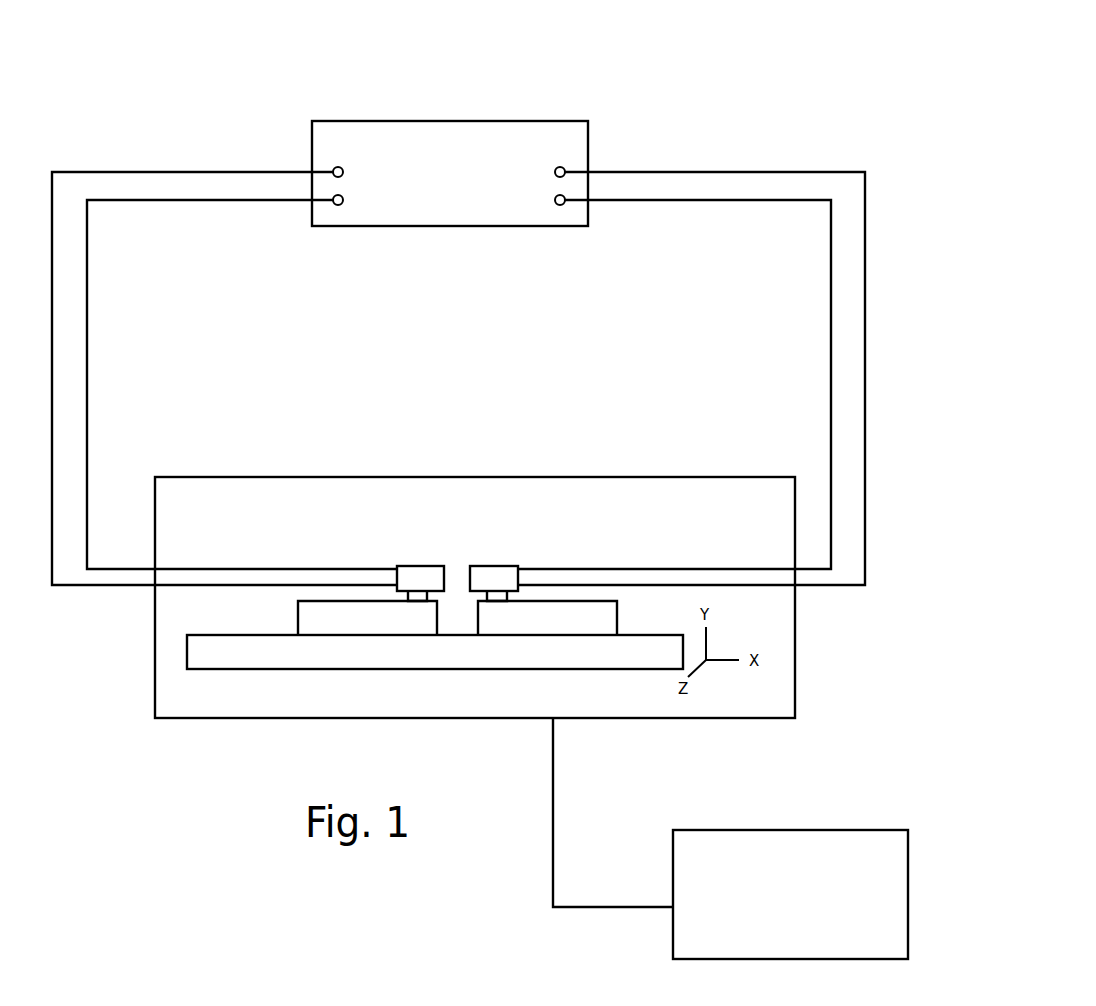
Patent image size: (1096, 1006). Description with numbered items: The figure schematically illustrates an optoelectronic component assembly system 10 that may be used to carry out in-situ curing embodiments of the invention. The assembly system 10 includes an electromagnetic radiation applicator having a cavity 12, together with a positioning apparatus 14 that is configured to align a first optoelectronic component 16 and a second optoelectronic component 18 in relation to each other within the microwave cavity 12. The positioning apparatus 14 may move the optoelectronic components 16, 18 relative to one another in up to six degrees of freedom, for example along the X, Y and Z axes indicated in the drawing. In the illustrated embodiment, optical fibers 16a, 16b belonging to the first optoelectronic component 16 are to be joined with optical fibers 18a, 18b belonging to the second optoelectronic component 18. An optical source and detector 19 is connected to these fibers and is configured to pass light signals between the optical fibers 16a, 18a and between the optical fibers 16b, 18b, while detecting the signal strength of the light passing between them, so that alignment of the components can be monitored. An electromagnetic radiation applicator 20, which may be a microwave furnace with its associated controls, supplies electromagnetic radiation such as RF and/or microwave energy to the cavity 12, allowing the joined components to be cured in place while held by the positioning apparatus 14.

The optoelectronic component assembly system 10 is at (690, 80).
The cavity 12 is at (528, 477).
The positioning apparatus 14 is at (553, 669).
The optoelectronic component 16 is at (420, 563).
The optical fiber 16a is at (238, 568).
The optical fiber 16b is at (163, 583).
The optoelectronic component 18 is at (493, 563).
The optical fiber 18a is at (648, 568).
The optical fiber 18b is at (582, 582).
The optical source and detector 19 is at (448, 120).
The electromagnetic radiation applicator 20 is at (730, 838).